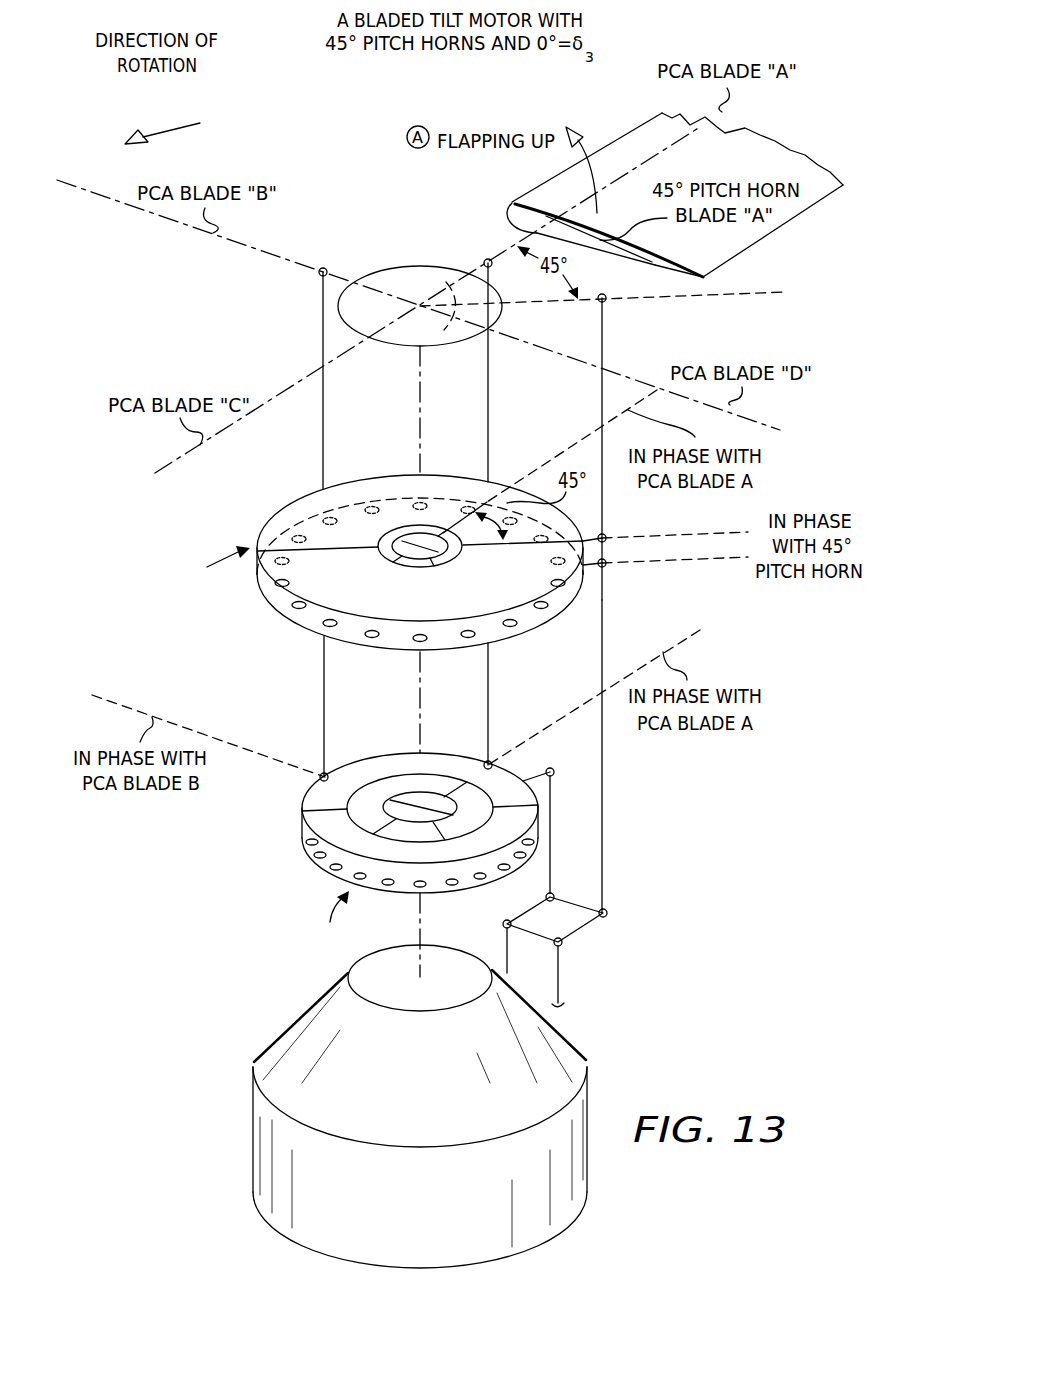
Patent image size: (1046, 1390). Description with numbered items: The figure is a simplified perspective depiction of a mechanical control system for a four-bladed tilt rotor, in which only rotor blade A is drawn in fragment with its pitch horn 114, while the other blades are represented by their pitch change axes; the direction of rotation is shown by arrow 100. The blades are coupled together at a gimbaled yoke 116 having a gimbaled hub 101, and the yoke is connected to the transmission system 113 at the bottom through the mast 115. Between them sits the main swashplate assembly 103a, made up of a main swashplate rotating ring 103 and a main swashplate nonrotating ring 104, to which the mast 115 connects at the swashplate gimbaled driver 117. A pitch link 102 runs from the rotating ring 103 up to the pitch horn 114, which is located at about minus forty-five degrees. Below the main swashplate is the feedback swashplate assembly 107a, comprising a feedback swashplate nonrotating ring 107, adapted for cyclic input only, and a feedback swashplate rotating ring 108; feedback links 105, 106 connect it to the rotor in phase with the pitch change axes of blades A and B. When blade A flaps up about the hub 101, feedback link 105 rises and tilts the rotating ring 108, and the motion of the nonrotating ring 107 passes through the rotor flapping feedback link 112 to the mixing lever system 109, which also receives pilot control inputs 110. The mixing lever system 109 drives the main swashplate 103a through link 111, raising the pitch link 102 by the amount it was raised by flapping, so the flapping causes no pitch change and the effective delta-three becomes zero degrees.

The arrow 100 is at (170, 128).
The gimbaled hub 101 is at (403, 347).
The pitch link 102 is at (603, 332).
The main swashplate rotating ring 103 is at (280, 507).
The main swashplate assembly 103a is at (367, 563).
The main swashplate nonrotating ring 104 is at (280, 602).
The feedback link 105 is at (492, 673).
The feedback link 106 is at (323, 698).
The feedback swashplate nonrotating ring 107 is at (317, 802).
The feedback swashplate assembly 107a is at (326, 922).
The feedback swashplate rotating ring 108 is at (310, 845).
The mixing lever system 109 is at (583, 930).
The pilot control inputs 110 is at (560, 980).
The link 111 is at (604, 780).
The rotor flapping feedback link 112 is at (552, 840).
The transmission system 113 is at (262, 1143).
The pitch horn 114 is at (775, 163).
The mast 115 is at (418, 703).
The gimbaled yoke 116 is at (415, 267).
The swashplate gimbaled driver 117 is at (400, 525).